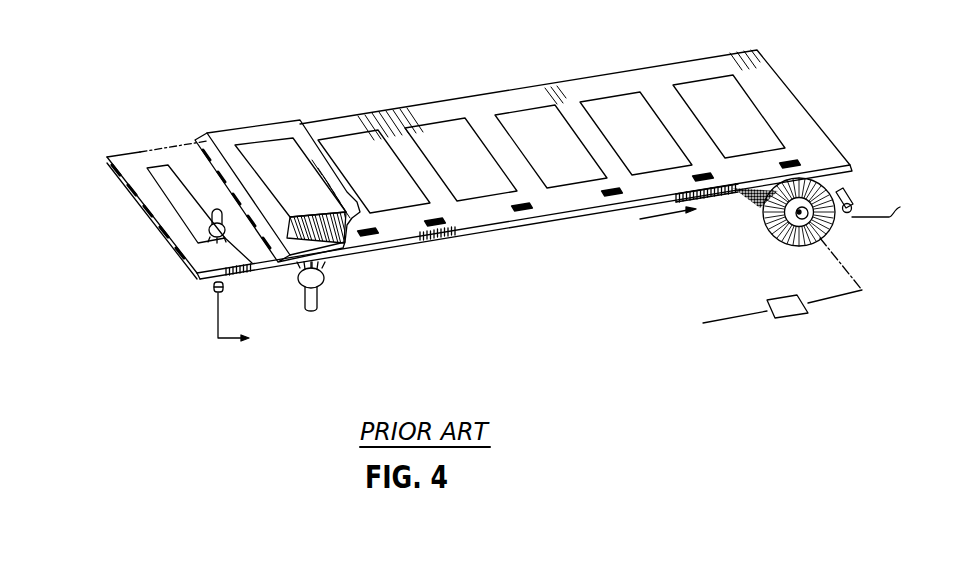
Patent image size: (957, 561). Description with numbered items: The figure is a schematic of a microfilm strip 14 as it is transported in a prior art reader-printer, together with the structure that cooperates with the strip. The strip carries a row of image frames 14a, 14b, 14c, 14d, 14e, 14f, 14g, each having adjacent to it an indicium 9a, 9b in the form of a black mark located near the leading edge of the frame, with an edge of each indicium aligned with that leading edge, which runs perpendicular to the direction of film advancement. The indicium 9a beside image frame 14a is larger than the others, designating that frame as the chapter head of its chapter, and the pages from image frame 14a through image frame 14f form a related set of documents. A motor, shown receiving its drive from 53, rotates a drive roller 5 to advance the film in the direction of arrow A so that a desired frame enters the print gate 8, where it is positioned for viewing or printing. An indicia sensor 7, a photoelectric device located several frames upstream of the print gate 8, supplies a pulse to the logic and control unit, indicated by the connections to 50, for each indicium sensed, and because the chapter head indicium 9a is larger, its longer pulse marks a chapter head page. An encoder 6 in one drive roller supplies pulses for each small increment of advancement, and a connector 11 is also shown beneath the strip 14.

The microfilm strip 14 is at (107, 155).
The image frame 14a is at (702, 87).
The image frame 14b is at (600, 105).
The image frame 14c is at (510, 120).
The image frame 14d is at (427, 135).
The image frame 14e is at (343, 141).
The image frame 14f is at (253, 152).
The image frame 14g is at (158, 170).
The print gate 8 is at (286, 124).
The chapter head indicium 9a is at (733, 180).
The indicium 9b is at (617, 232).
The arrow A is at (658, 216).
The drive roller 5 is at (770, 238).
The encoder 6 is at (834, 218).
The indicia sensor 7 is at (224, 287).
The connector plug 11 is at (305, 300).
The external unit 50 is at (586, 279).
The motor drive 53 is at (732, 314).